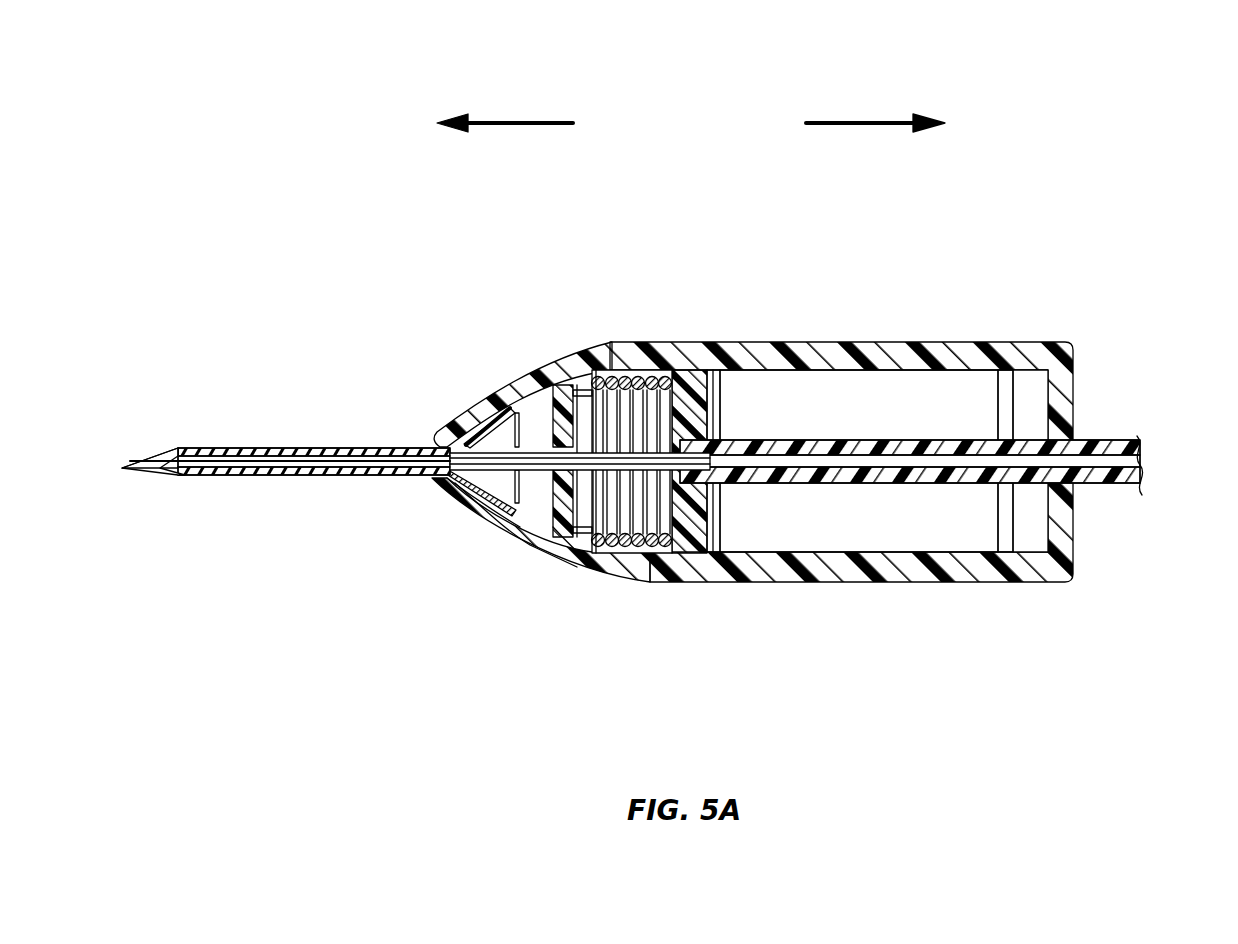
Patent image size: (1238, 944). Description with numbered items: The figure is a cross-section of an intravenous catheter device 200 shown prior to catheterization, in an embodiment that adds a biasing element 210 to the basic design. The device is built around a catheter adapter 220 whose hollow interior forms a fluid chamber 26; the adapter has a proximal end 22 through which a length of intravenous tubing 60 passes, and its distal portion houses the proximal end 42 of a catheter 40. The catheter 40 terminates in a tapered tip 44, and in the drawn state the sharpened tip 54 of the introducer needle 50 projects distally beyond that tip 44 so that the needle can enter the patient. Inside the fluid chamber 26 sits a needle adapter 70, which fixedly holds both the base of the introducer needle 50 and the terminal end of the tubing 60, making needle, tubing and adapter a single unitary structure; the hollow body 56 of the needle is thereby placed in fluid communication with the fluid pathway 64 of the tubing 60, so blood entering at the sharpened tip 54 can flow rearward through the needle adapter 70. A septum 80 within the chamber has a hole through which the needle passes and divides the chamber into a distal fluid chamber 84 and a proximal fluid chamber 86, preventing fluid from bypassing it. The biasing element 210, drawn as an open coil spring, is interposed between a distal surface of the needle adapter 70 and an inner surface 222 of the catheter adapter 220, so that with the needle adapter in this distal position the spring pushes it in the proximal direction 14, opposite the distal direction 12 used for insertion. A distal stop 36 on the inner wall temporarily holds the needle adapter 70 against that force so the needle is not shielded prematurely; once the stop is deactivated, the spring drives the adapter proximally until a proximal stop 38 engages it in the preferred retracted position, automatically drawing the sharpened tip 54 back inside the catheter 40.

The distal direction 12 is at (516, 123).
The proximal direction 14 is at (880, 123).
The intravenous catheter device 200 is at (1100, 295).
The proximal end 22 is at (1075, 523).
The catheter adapter 220 is at (730, 342).
The fluid chamber 26 is at (880, 390).
The distal stop 36 is at (735, 540).
The proximal stop 38 is at (1012, 538).
The proximal fluid chamber 86 is at (1033, 387).
The needle adapter 70 is at (680, 545).
The biasing element 210 is at (625, 378).
The septum 80 is at (548, 430).
The inner surface 222 is at (570, 568).
The distal fluid chamber 84 is at (497, 438).
The proximal end 42 is at (477, 503).
The introducer needle 50 is at (530, 470).
The intravenous tubing 60 is at (1118, 483).
The fluid pathway 64 is at (1093, 463).
The catheter 40 is at (298, 448).
The hollow body 56 is at (355, 448).
The tip 44 is at (175, 478).
The sharpened tip 54 is at (125, 470).